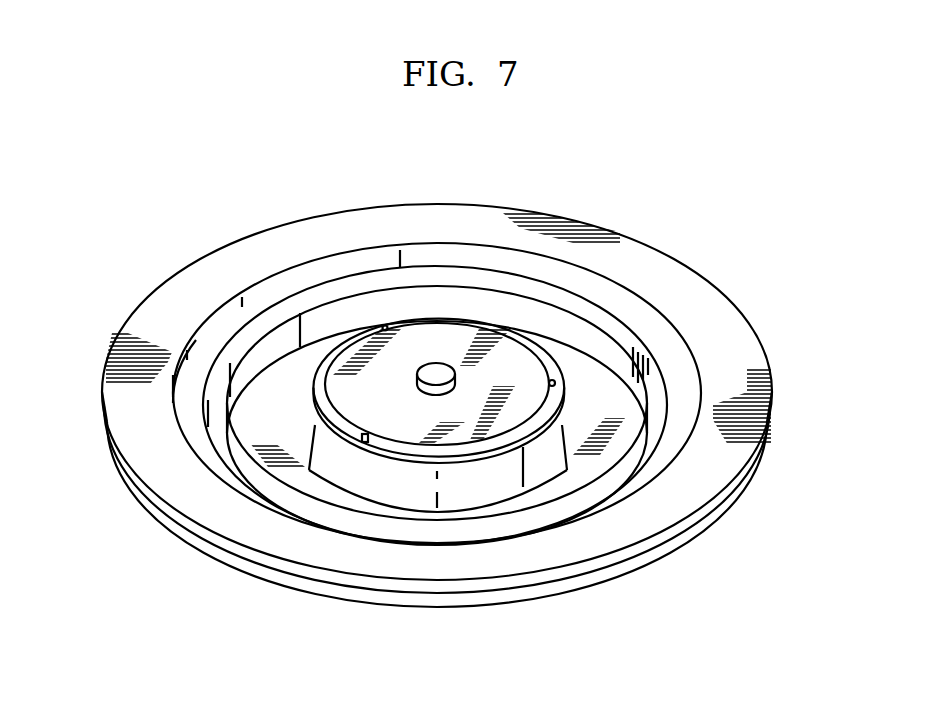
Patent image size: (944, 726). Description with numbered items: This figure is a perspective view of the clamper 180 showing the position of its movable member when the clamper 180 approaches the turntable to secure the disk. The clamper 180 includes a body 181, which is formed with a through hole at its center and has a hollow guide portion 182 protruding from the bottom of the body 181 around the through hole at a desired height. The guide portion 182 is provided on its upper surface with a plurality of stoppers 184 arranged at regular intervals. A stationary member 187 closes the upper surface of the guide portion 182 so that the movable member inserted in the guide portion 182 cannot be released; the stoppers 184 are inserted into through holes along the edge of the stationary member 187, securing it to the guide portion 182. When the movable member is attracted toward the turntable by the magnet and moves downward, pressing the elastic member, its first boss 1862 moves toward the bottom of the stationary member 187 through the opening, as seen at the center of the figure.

The clamper 180 is at (167, 261).
The body 181 is at (713, 317).
The guide portion 182 is at (380, 473).
The stoppers 184 is at (553, 379).
The stationary member 187 is at (368, 368).
The first boss 1862 is at (438, 372).